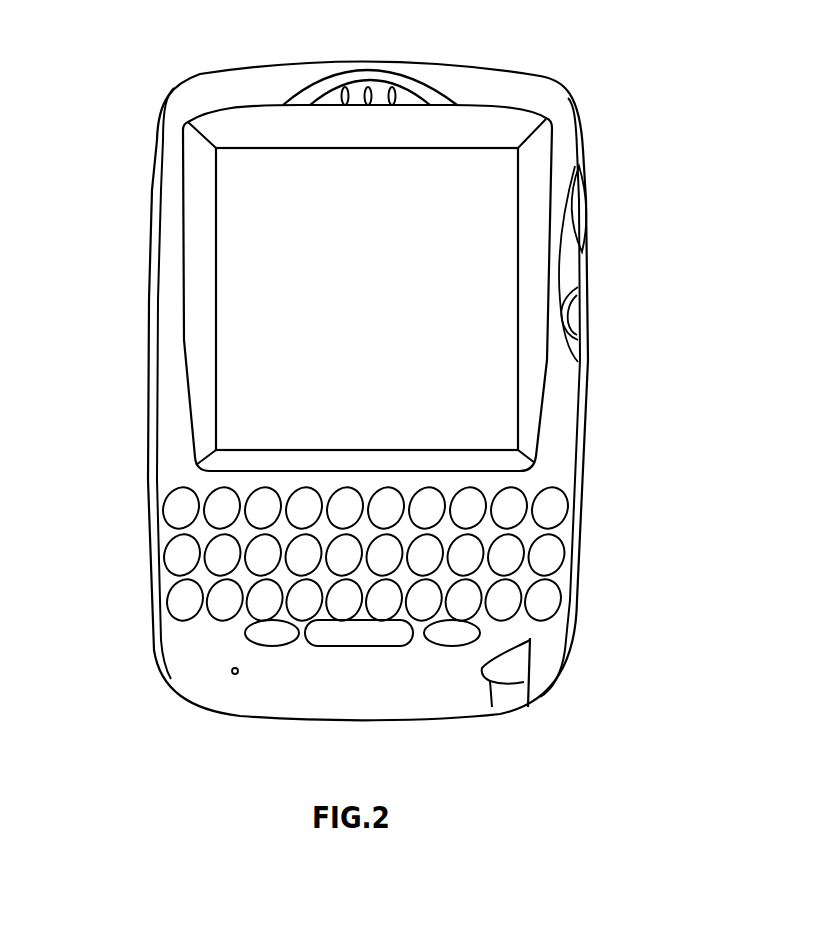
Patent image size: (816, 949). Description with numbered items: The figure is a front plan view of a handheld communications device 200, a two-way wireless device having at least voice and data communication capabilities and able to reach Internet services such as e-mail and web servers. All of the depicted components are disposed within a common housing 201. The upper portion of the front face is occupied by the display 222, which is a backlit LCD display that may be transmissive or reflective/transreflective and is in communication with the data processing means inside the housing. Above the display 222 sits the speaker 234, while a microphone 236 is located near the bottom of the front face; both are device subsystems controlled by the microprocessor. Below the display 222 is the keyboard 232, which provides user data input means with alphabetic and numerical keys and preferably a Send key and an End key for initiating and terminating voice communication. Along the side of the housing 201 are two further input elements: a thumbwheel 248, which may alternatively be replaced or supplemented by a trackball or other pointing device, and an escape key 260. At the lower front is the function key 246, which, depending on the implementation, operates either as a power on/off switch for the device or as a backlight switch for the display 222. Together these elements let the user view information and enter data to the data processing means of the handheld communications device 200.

The handheld communications device 200 is at (143, 95).
The common housing 201 is at (253, 63).
The display 222 is at (520, 384).
The keyboard 232 is at (603, 479).
The speaker 234 is at (368, 106).
The microphone 236 is at (235, 675).
The function key 246 is at (492, 709).
The thumbwheel 248 is at (588, 218).
The escape key 260 is at (576, 307).